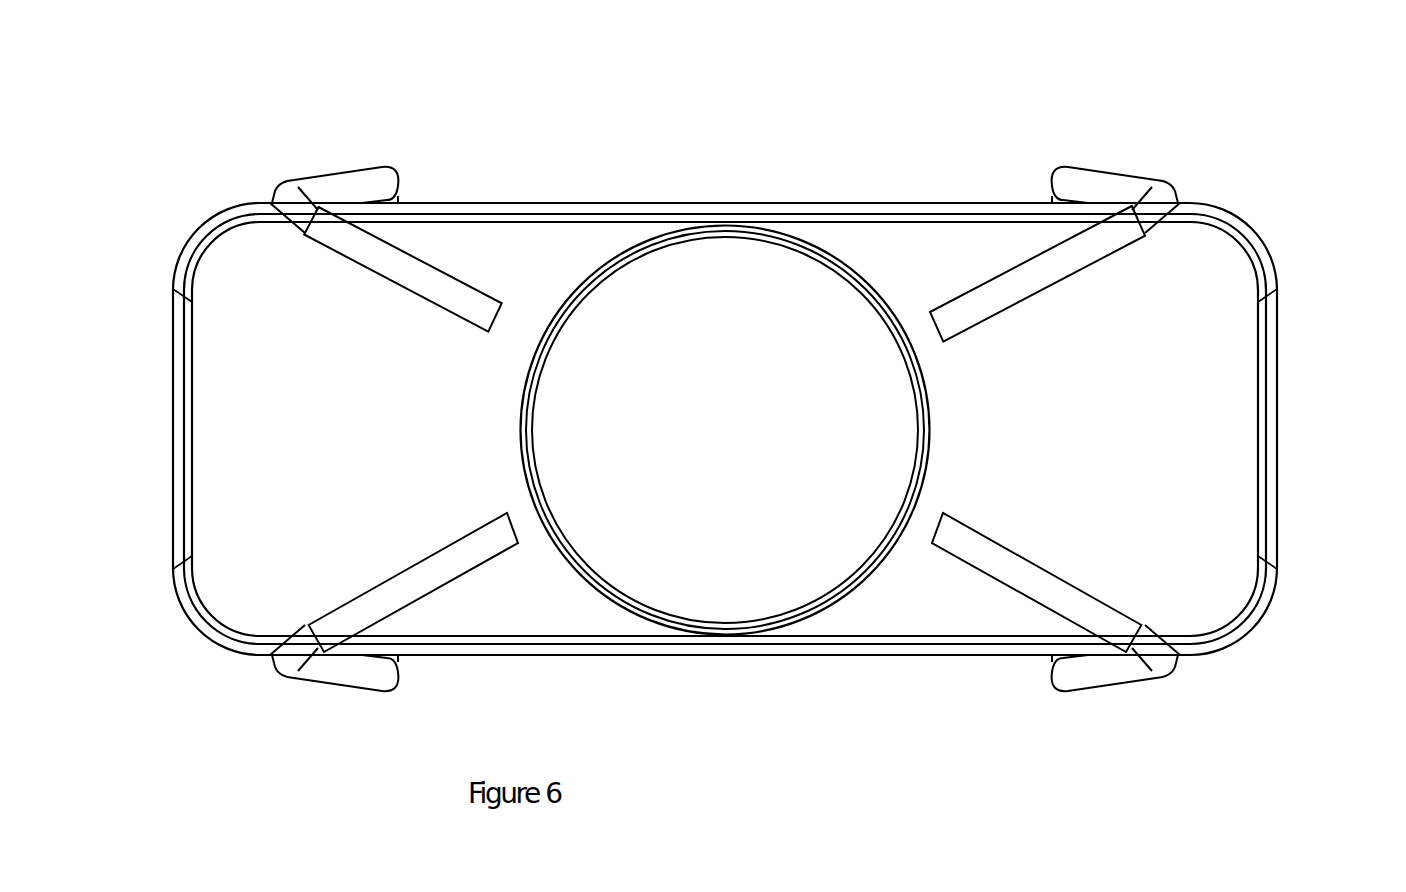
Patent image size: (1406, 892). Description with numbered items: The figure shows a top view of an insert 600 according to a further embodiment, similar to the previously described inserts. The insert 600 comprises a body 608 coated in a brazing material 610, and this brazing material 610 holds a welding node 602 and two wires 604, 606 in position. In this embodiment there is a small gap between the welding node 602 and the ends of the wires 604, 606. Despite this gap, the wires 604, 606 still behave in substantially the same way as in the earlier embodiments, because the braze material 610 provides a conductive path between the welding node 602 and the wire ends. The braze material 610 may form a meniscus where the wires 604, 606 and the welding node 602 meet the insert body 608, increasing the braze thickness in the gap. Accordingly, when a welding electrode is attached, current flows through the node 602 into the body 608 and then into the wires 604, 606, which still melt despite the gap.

The insert 600 is at (100, 108).
The welding node 602 is at (670, 258).
The wire 604 is at (330, 192).
The wire 606 is at (1077, 180).
The body 608 is at (895, 277).
The brazing material 610 is at (1255, 392).